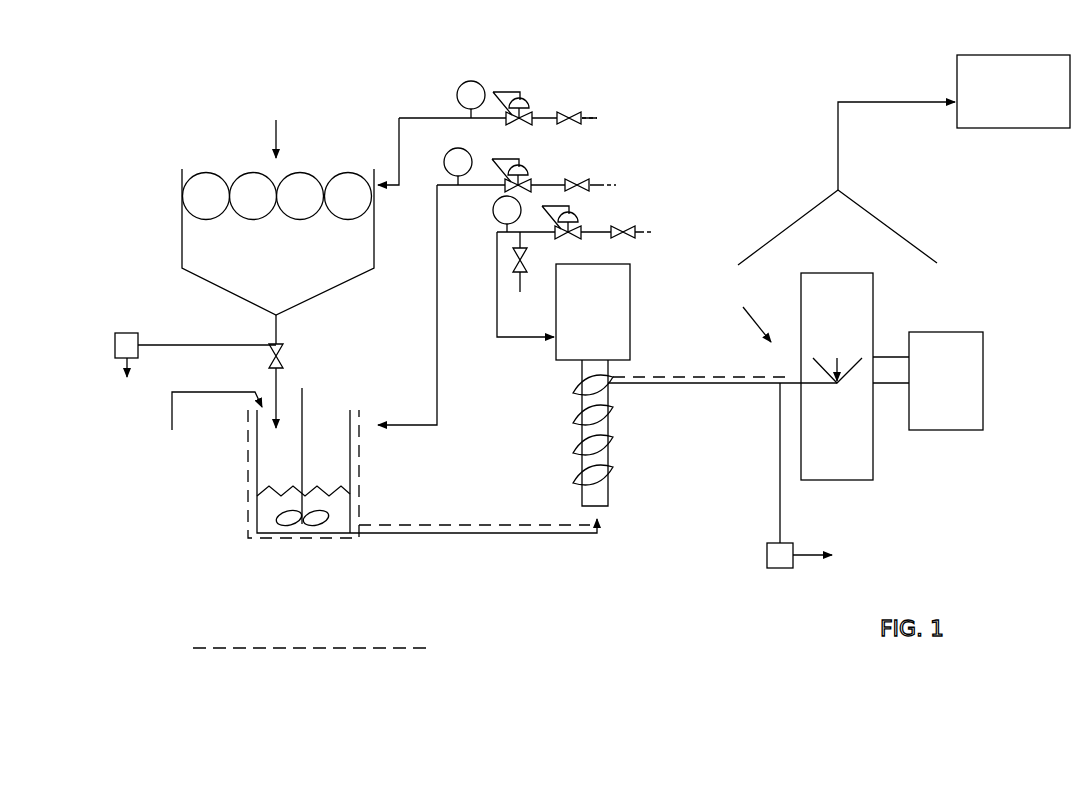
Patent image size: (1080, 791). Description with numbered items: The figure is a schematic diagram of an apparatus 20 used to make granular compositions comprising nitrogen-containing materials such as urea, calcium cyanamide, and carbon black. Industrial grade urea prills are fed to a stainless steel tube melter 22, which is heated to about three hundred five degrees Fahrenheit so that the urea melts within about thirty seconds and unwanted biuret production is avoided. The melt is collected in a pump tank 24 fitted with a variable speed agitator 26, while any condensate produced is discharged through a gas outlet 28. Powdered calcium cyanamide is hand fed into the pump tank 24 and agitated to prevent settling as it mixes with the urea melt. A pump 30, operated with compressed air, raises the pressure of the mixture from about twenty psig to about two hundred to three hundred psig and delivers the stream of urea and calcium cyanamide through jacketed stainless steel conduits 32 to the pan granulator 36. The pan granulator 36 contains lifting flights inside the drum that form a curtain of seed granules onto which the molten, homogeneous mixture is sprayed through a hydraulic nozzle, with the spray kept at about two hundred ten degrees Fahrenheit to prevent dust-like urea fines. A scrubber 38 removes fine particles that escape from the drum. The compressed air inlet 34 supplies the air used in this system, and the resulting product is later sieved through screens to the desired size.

The apparatus 20 is at (768, 68).
The tube melter 22 is at (190, 256).
The pump tank 24 is at (262, 479).
The agitator 26 is at (330, 519).
The gas outlet 28 is at (183, 347).
The pump 30 is at (622, 556).
The jacketed stainless steel conduits 32 is at (618, 439).
The compressed air inlet 34 is at (728, 207).
The pan granulator 36 is at (855, 476).
The scrubber 38 is at (1028, 118).